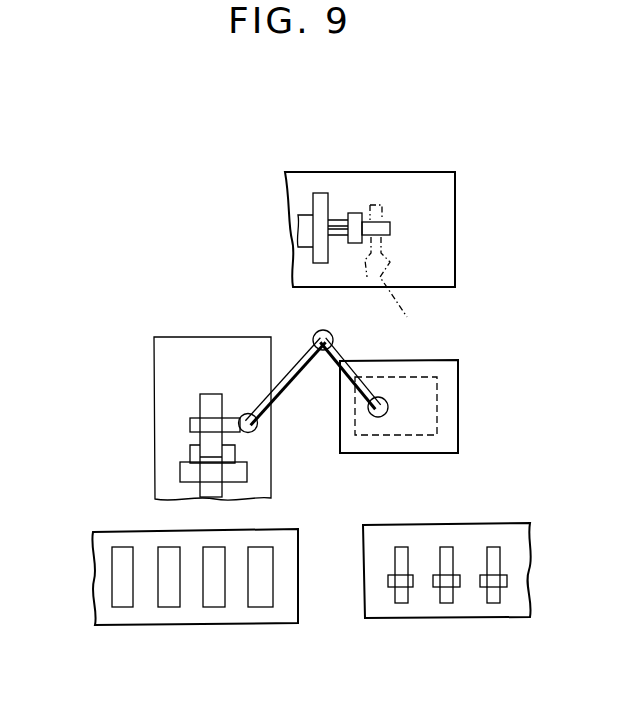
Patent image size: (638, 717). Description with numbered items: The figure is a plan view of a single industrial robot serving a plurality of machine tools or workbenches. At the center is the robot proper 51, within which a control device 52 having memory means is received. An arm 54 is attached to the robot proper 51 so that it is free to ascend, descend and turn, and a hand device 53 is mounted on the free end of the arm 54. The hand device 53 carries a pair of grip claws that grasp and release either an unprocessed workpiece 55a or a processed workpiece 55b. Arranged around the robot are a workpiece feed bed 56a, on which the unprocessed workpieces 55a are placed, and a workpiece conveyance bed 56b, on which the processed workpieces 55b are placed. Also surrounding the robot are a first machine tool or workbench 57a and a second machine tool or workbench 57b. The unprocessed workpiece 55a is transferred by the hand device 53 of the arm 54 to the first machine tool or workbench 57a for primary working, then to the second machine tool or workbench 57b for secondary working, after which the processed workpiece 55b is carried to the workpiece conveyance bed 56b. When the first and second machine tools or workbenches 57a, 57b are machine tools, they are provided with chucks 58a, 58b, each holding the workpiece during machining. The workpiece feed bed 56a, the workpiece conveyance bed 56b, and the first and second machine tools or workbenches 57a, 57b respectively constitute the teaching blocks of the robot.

The robot proper 51 is at (458, 365).
The control device 52 is at (397, 377).
The hand device 53 is at (378, 203).
The arm 54 is at (300, 363).
The unprocessed workpiece 55a is at (117, 570).
The processed workpiece 55b is at (352, 213).
The workpiece feed bed 56a is at (290, 530).
The workpiece conveyance bed 56b is at (375, 523).
The first machine tool or workbench 57a is at (154, 337).
The second machine tool or workbench 57b is at (447, 182).
The chuck 58a is at (180, 475).
The chuck 58b is at (327, 263).